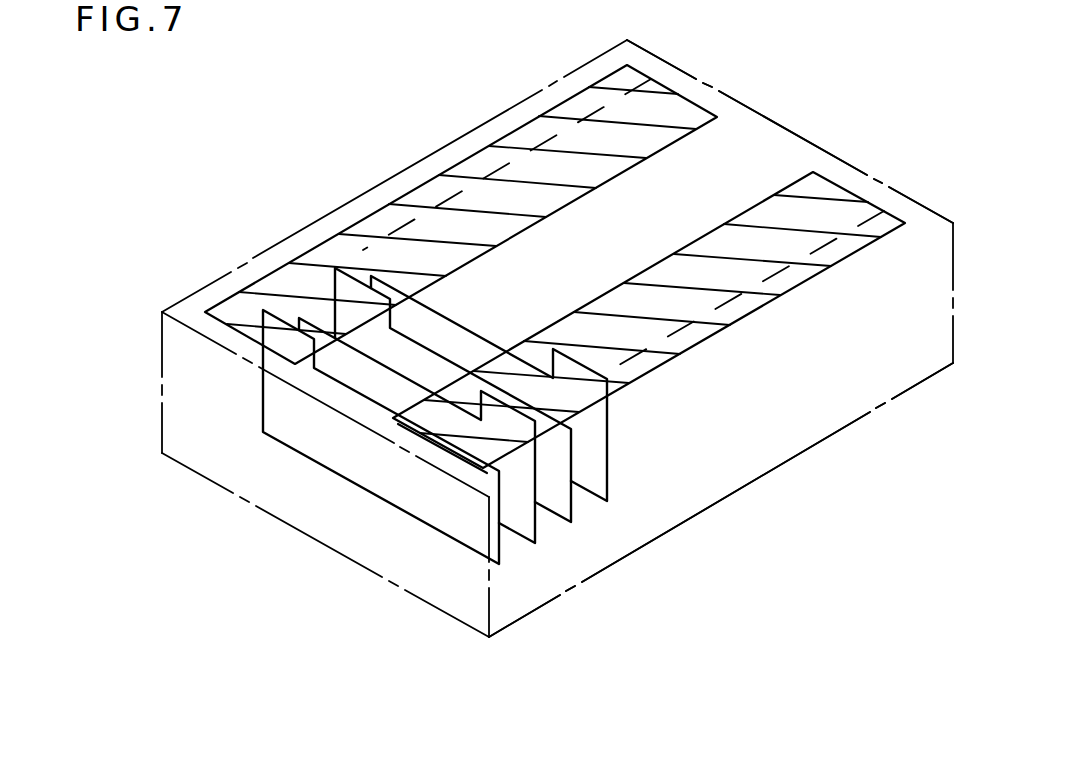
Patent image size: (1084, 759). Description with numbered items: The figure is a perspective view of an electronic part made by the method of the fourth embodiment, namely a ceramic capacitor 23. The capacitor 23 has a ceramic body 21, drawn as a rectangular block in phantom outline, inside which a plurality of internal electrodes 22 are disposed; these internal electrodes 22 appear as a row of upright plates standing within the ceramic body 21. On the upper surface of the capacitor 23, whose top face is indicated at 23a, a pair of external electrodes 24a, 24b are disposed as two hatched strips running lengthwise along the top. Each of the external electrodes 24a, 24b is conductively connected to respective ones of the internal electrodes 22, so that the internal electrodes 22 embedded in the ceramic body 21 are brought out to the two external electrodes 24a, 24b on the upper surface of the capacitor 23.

The ceramic body 21 is at (620, 541).
The internal electrodes 22 is at (370, 476).
The ceramic capacitor 23 is at (767, 481).
The top surface 23a is at (752, 135).
The external electrode 24a is at (433, 178).
The external electrode 24b is at (778, 293).